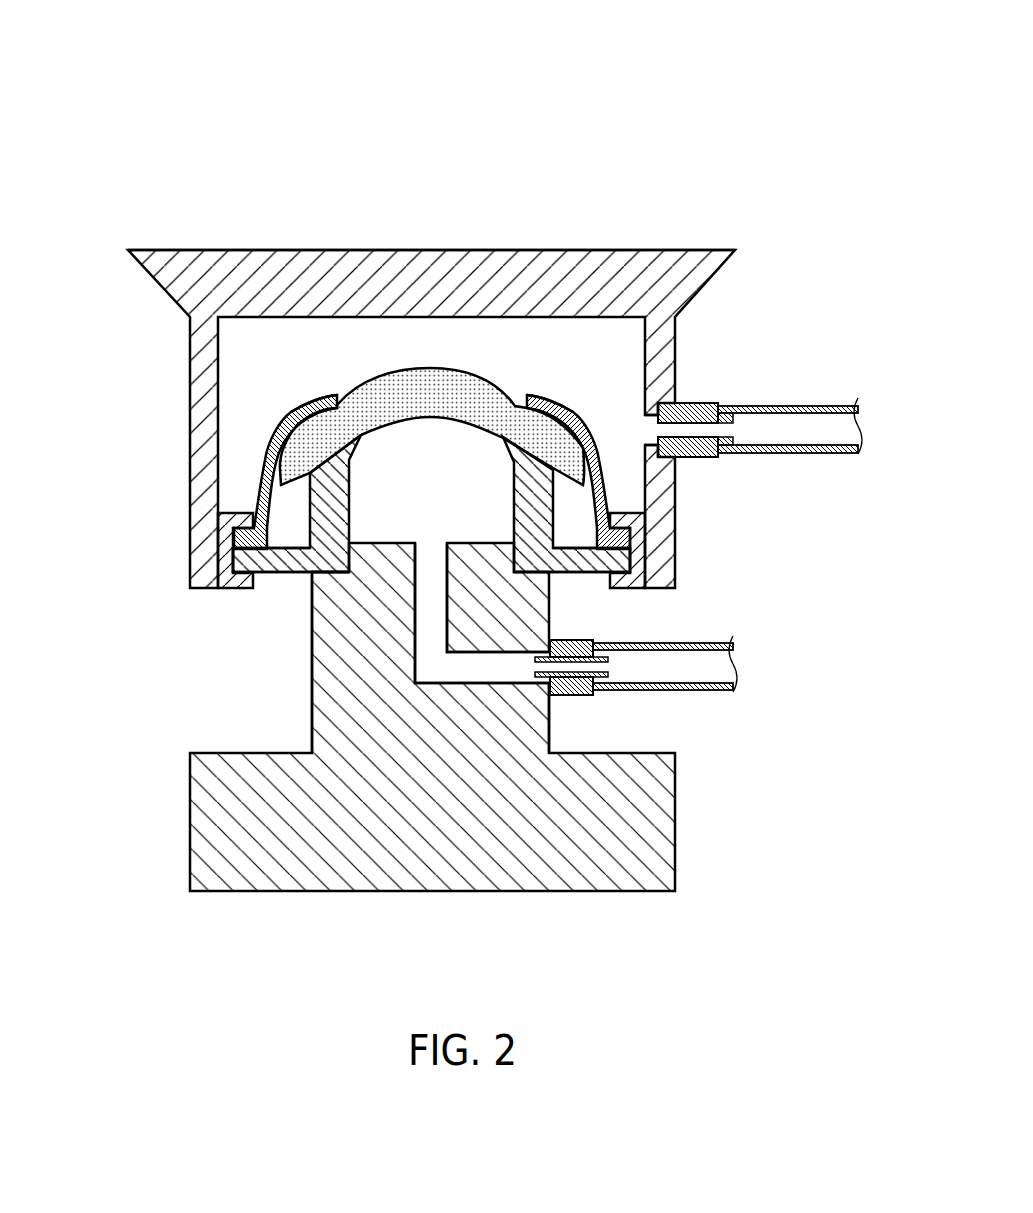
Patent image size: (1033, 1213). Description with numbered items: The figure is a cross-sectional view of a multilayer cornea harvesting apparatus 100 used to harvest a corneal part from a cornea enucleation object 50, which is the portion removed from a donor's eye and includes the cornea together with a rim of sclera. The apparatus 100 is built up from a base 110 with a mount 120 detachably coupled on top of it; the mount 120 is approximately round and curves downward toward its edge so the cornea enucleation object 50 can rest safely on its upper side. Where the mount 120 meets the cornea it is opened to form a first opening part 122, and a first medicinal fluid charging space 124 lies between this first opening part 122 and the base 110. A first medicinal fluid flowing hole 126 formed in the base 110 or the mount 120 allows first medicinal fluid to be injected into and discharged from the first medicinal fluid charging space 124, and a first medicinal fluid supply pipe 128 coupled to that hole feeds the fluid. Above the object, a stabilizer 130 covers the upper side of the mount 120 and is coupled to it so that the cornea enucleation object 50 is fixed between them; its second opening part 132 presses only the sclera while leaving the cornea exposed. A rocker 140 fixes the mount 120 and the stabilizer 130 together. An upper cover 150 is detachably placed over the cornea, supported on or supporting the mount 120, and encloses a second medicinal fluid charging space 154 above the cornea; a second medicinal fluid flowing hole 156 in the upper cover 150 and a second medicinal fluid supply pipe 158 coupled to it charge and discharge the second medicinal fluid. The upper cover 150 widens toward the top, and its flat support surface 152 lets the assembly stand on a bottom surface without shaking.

The multilayer cornea harvesting apparatus 100 is at (455, 55).
The cornea enucleation object 50 is at (452, 378).
The base 110 is at (676, 823).
The mount 120 is at (290, 573).
The first opening part 122 is at (363, 435).
The first medicinal fluid charging space 124 is at (633, 553).
The first medicinal fluid flowing hole 126 is at (452, 665).
The first medicinal fluid supply pipe 128 is at (697, 690).
The stabilizer 130 is at (272, 433).
The second opening part 132 is at (338, 412).
The rocker 140 is at (228, 523).
The upper cover 150 is at (665, 335).
The support surface 152 is at (262, 274).
The second medicinal fluid charging space 154 is at (608, 363).
The second medicinal fluid flowing hole 156 is at (646, 435).
The second medicinal fluid supply pipe 158 is at (805, 406).